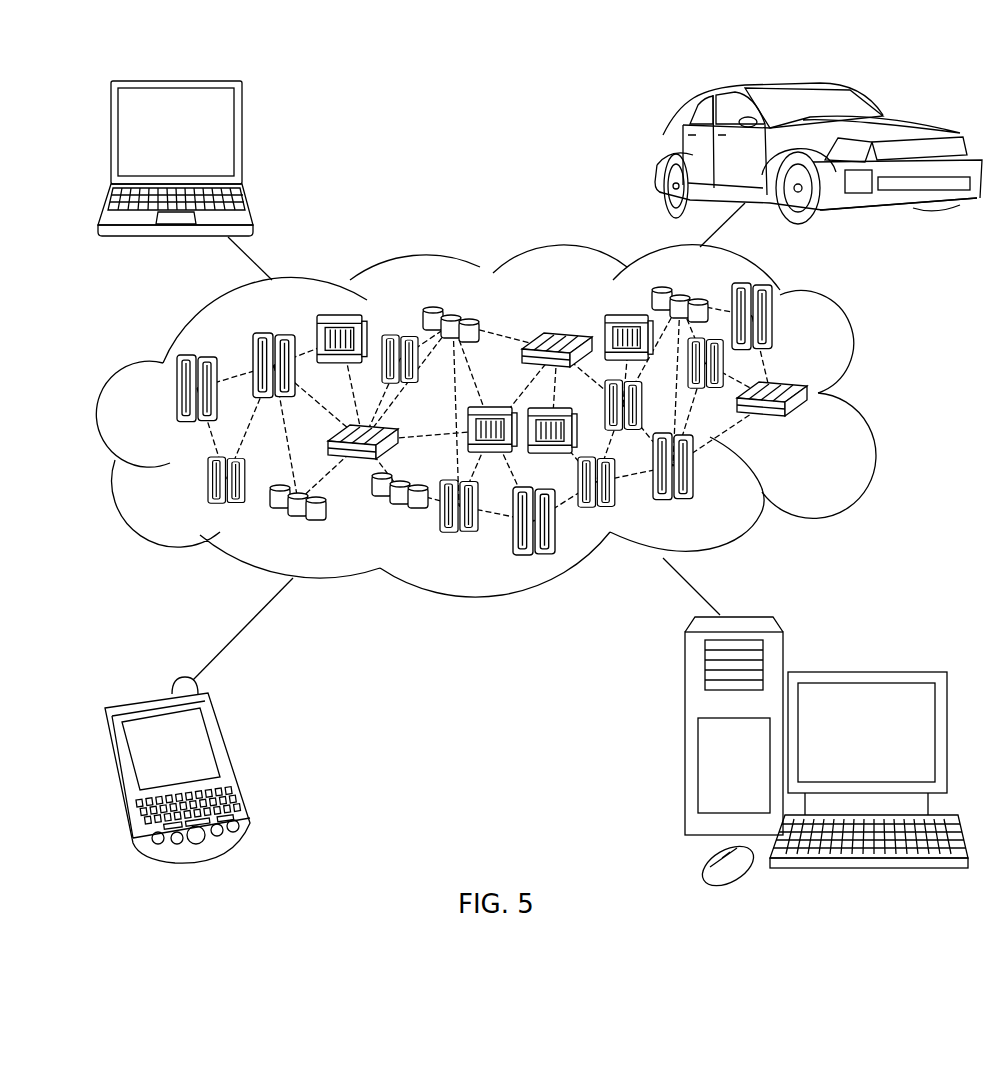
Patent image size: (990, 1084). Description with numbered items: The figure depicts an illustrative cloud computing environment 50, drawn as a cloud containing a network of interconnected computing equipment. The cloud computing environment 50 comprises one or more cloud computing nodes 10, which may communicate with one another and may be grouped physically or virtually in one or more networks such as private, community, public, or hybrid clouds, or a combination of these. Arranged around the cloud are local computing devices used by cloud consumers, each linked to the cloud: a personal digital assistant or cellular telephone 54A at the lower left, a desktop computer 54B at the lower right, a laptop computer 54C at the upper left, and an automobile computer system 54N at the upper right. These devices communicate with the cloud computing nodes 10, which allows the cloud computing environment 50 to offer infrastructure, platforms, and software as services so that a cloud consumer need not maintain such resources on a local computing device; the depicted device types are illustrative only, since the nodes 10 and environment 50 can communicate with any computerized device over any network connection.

The cloud computing node 10 is at (808, 425).
The cloud computing environment 50 is at (867, 400).
The personal digital assistant or cellular telephone 54A is at (232, 762).
The desktop computer 54B is at (863, 672).
The laptop computer 54C is at (242, 140).
The automobile computer system 54N is at (657, 152).